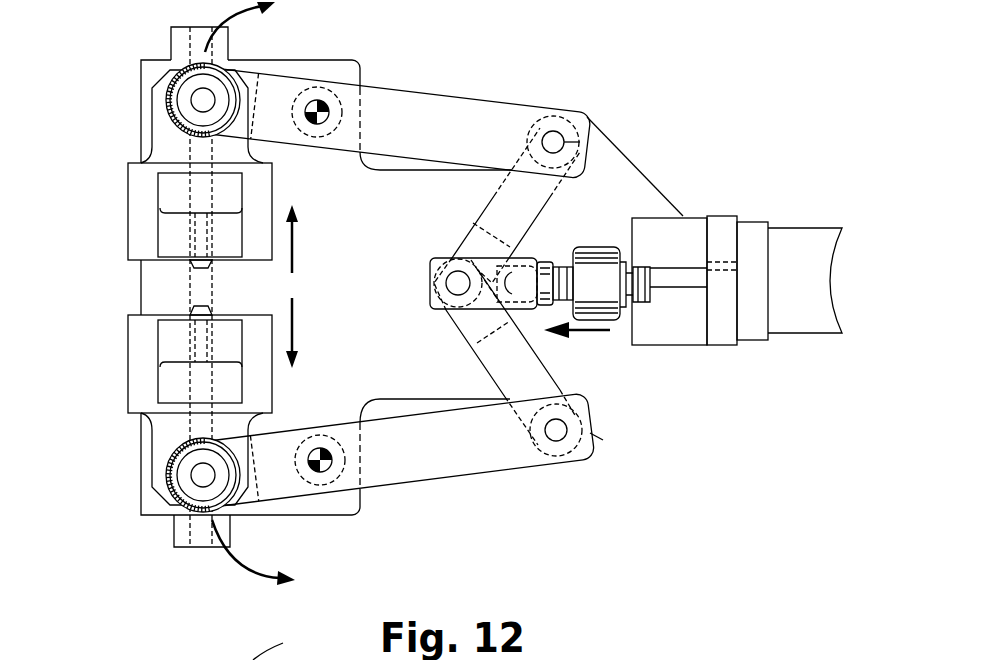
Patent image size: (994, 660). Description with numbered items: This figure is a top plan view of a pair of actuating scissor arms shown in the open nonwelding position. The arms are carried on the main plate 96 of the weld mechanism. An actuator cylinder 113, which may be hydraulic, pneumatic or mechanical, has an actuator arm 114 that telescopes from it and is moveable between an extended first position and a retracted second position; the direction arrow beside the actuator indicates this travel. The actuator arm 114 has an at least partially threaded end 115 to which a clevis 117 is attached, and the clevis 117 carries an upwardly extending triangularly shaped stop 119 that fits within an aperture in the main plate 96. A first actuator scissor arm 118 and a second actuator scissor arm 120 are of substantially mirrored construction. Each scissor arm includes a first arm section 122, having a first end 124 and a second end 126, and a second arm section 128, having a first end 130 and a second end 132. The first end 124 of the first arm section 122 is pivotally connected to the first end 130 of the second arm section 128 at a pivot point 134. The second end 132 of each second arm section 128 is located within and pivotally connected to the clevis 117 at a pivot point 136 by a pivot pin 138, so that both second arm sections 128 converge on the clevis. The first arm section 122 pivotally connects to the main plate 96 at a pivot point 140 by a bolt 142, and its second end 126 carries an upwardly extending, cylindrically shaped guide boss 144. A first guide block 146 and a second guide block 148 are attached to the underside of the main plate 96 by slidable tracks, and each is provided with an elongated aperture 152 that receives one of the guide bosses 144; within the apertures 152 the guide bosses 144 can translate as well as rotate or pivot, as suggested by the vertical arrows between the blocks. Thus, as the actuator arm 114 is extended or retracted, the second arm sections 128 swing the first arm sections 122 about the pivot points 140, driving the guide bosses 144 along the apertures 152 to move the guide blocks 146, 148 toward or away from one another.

The main plate 96 is at (626, 153).
The actuator cylinder 113 is at (800, 228).
The actuator arm 114 is at (658, 263).
The end of actuator arm 115 is at (550, 280).
The clevis 117 is at (432, 277).
The first actuator scissor arm 118 is at (380, 467).
The stop 119 is at (527, 266).
The second actuator scissor arm 120 is at (430, 91).
The first arm section 122 is at (430, 482).
The first end of first arm section 124 is at (592, 434).
The second end of first arm section 126 is at (188, 443).
The second arm section 128 is at (533, 345).
The first end of second arm section 130 is at (580, 388).
The second end of second arm section 132 is at (430, 308).
The pivot point 134 is at (567, 424).
The pivot point 136 is at (447, 281).
The pivot pin 138 is at (200, 266).
The pivot point 140 is at (200, 307).
The bolt 142 is at (329, 471).
The guide boss 144 is at (188, 501).
The first guide block 146 is at (128, 363).
The second guide block 148 is at (128, 210).
The elongated aperture 152 is at (181, 501).